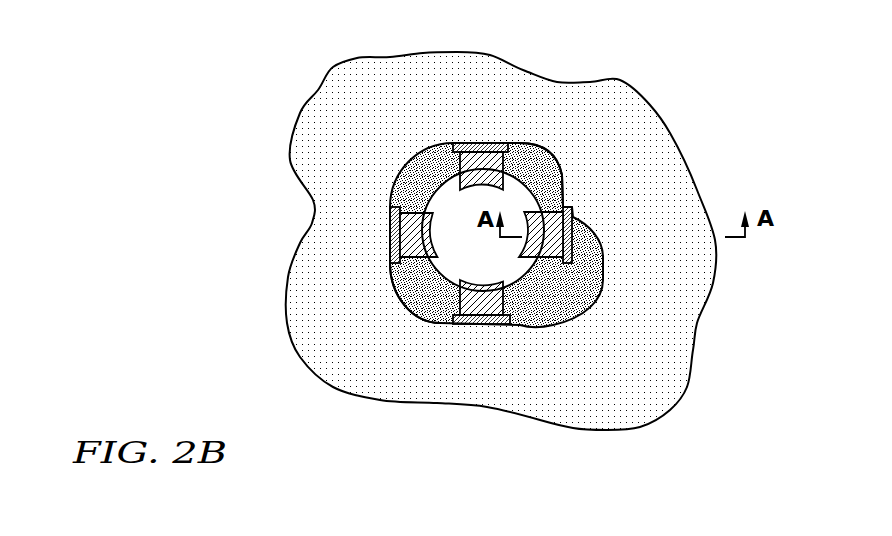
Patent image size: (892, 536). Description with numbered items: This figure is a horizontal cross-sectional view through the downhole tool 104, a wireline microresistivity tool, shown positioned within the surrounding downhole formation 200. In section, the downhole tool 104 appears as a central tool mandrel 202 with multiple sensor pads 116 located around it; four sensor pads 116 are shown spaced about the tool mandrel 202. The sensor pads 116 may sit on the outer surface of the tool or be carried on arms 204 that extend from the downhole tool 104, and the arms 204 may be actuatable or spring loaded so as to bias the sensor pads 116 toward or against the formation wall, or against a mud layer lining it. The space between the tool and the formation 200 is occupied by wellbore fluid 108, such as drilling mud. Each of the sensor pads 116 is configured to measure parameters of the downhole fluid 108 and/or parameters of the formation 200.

The downhole formation 200 is at (683, 276).
The downhole tool 104 is at (428, 186).
The wellbore fluid 108 is at (563, 290).
The sensor pads 116 is at (477, 141).
The tool mandrel 202 is at (443, 280).
The arms 204 is at (500, 166).